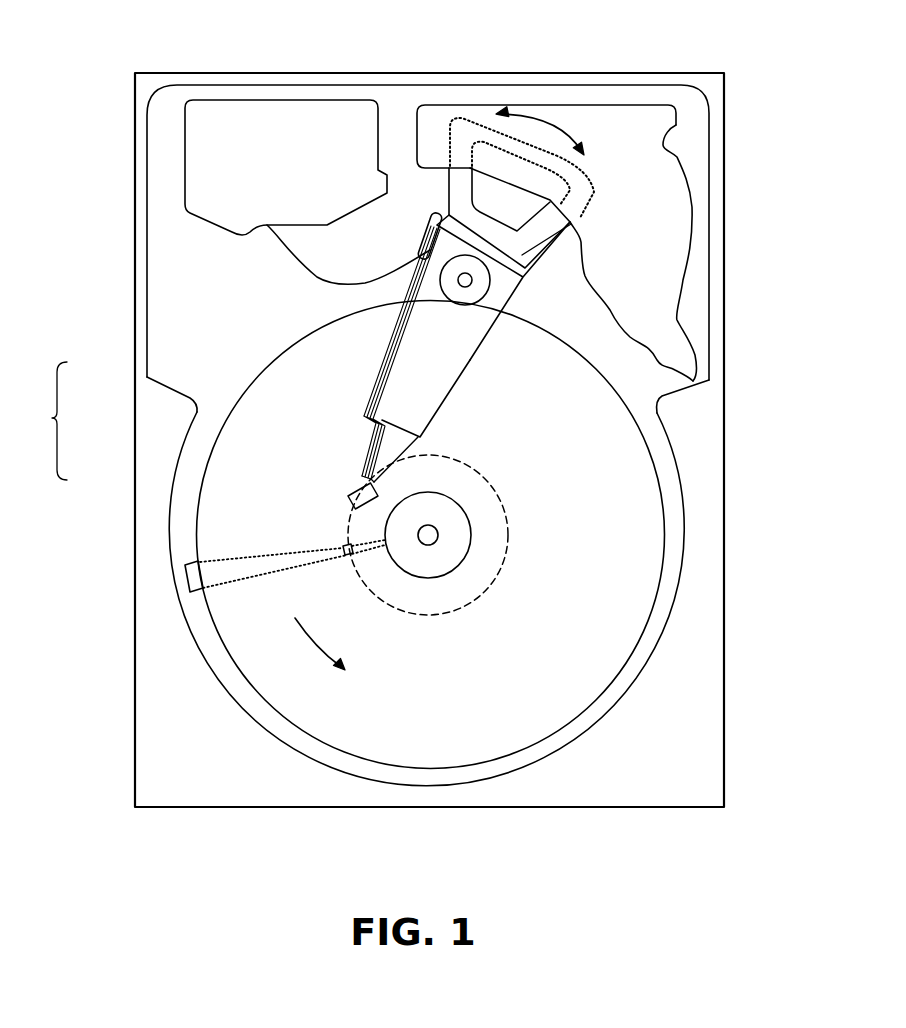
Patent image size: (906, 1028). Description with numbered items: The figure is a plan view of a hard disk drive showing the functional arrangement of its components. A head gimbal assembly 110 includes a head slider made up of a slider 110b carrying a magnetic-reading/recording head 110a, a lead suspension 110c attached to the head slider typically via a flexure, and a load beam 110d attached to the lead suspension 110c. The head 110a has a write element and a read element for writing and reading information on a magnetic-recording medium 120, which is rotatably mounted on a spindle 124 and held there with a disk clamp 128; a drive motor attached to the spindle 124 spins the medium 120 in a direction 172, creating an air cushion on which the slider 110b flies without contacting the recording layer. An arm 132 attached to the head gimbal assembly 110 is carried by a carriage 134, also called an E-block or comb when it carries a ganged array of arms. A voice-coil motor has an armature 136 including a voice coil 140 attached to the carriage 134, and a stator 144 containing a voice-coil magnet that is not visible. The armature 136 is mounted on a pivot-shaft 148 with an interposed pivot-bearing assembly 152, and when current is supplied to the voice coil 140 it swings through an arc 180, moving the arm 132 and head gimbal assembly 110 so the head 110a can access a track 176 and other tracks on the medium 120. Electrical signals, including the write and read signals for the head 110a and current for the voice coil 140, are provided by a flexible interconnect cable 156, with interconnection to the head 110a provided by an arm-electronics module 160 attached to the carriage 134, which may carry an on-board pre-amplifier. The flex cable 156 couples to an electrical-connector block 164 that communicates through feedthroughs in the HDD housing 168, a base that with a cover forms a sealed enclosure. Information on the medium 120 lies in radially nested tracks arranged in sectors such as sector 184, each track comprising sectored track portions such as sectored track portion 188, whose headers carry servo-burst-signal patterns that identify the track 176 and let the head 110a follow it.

The head gimbal assembly 110 is at (39, 421).
The magnetic-reading/recording head 110a is at (352, 512).
The slider 110b is at (362, 487).
The lead suspension 110c is at (372, 450).
The load beam 110d is at (365, 417).
The magnetic-recording medium 120 is at (592, 492).
The spindle 124 is at (438, 535).
The disk clamp 128 is at (453, 548).
The arm 132 is at (422, 387).
The carriage 134 is at (483, 310).
The armature 136 is at (445, 205).
The voice coil 140 is at (462, 180).
The stator 144 is at (660, 188).
The pivot-shaft 148 is at (472, 279).
The pivot-bearing assembly 152 is at (477, 290).
The flexible interconnect cable 156 is at (297, 257).
The arm-electronics module 160 is at (424, 248).
The electrical-connector block 164 is at (207, 165).
The HDD housing 168 is at (707, 85).
The direction 172 is at (328, 648).
The track 176 is at (498, 500).
The arc 180 is at (540, 122).
The sector 184 is at (185, 580).
The sectored track portion 188 is at (343, 548).